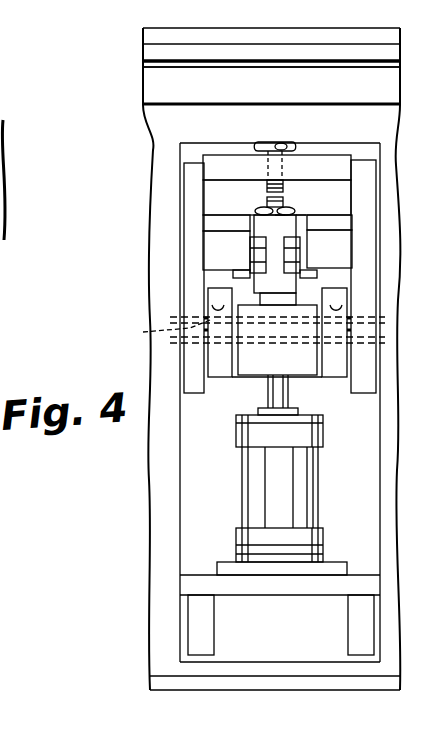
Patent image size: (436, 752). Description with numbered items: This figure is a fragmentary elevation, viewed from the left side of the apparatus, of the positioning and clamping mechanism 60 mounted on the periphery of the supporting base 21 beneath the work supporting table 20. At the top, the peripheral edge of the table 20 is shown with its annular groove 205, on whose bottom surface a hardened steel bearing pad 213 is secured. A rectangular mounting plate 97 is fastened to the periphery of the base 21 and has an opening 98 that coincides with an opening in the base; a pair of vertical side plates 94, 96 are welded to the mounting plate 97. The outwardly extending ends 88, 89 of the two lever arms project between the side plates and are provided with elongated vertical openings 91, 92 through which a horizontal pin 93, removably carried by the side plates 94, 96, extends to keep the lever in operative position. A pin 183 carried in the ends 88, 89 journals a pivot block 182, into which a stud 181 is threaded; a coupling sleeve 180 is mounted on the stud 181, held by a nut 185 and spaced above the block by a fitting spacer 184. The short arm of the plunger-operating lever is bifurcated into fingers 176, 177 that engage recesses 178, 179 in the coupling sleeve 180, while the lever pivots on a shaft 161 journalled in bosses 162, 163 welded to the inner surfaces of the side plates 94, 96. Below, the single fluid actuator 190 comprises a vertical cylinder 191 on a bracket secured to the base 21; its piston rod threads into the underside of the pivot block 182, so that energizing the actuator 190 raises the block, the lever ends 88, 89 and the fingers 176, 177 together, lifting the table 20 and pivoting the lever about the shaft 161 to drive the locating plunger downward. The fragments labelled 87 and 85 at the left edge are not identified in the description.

The work supporting table 20 is at (152, 36).
The annular groove 205 is at (160, 59).
The hardened steel bearing pad 213 is at (160, 67).
The supporting base 21 is at (165, 120).
The adjacent member 87 is at (4, 194).
The adjacent member 85 is at (5, 150).
The side plate 94 is at (184, 180).
The side plate 96 is at (364, 170).
The stud 181 is at (282, 196).
The nut 185 is at (262, 208).
The coupling sleeve 180 is at (283, 222).
The recess 179 is at (300, 222).
The finger 177 is at (329, 222).
The boss 162 is at (243, 231).
The finger 176 is at (254, 256).
The recess 178 is at (250, 273).
The boss 163 is at (329, 249).
The fitting spacer 184 is at (302, 275).
The shaft 161 is at (302, 268).
The pin 183 is at (318, 353).
The outwardly extending end 88 is at (210, 362).
The outwardly extending end 89 is at (334, 370).
The elongated vertical opening 91 is at (210, 318).
The horizontal pin 93 is at (146, 331).
The elongated vertical opening 92 is at (350, 312).
The pivot block 182 is at (260, 367).
The opening 98 is at (345, 382).
The cylinder 191 is at (298, 490).
The fluid actuator 190 is at (208, 483).
The mounting plate 97 is at (195, 518).
The positioning and clamping mechanism 60 is at (108, 353).